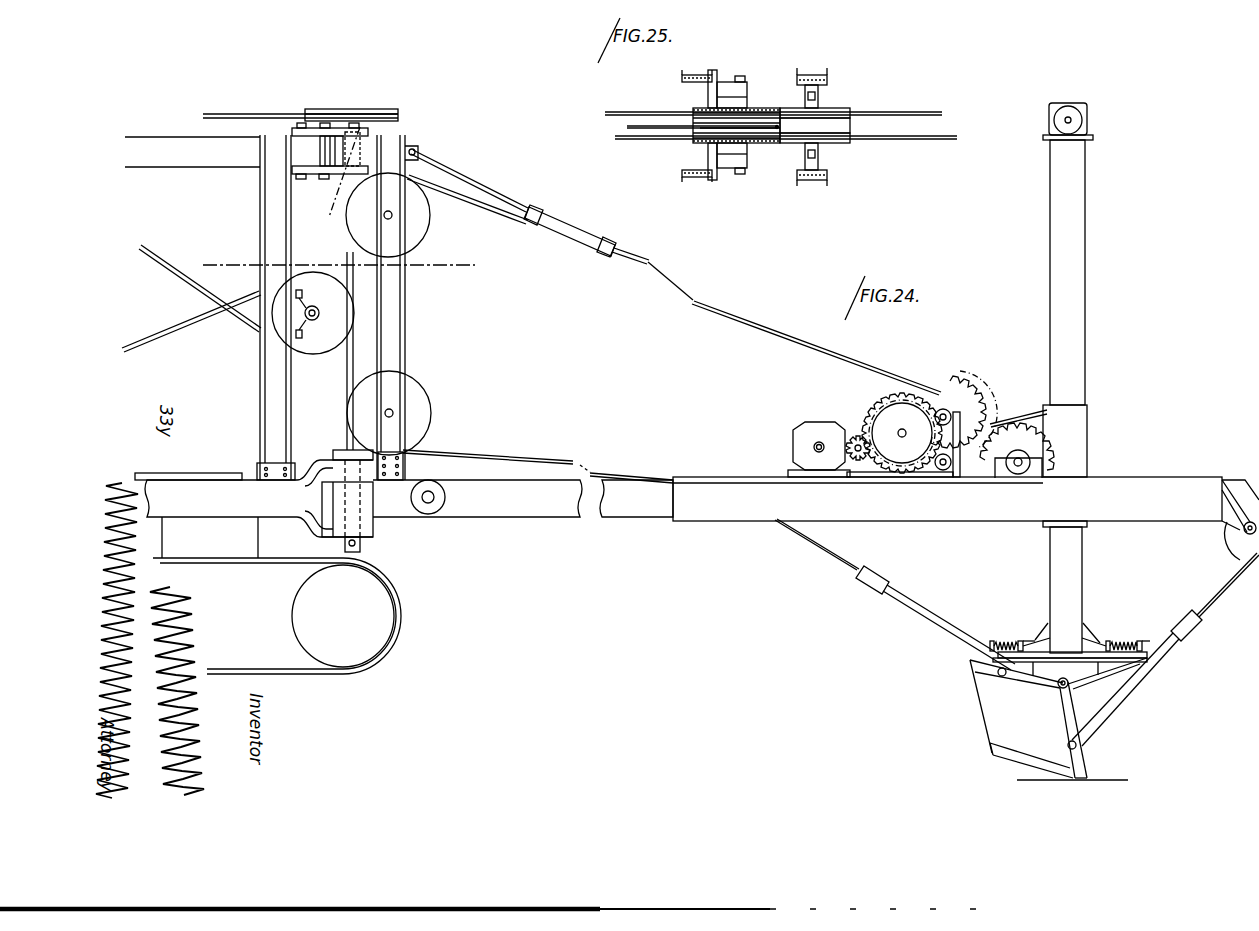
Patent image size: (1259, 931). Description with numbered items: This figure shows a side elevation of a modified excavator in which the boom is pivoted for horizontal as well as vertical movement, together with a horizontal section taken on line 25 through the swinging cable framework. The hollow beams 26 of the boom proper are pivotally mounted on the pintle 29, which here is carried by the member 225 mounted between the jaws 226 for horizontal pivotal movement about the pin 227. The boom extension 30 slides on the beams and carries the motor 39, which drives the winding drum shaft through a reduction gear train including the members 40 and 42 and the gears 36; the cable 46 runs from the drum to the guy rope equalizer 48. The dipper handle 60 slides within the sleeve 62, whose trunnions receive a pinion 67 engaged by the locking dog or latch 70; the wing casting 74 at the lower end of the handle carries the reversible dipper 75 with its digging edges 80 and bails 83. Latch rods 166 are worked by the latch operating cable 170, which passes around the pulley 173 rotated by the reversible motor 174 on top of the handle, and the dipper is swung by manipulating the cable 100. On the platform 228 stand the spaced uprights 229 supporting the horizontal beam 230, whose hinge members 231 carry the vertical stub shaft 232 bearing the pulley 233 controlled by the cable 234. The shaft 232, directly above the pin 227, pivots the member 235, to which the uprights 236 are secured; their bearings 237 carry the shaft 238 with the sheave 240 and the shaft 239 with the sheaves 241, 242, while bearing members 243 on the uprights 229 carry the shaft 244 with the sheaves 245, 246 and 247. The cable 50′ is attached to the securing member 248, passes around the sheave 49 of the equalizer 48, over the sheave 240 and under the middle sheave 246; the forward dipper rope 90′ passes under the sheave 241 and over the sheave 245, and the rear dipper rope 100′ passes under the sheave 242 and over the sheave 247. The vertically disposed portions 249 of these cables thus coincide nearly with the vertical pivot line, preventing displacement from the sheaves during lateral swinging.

In FIG. 24, the section line 25 is at (217, 260).
In FIG. 24, the hollow beams 26 is at (560, 516).
In FIG. 24, the pintle 29 is at (445, 497).
In FIG. 24, the boom extension 30 is at (922, 512).
In FIG. 24, the gears 36 is at (952, 400).
In FIG. 24, the motor 39 is at (813, 425).
In FIG. 24, the reduction gear train member 40 is at (946, 388).
In FIG. 24, the reduction gear train member 42 is at (902, 470).
In FIG. 24, the cable 46 is at (750, 325).
In FIG. 24, the guy rope equalizer 48 is at (565, 240).
In FIG. 24, the sheave 49 is at (528, 210).
In FIG. 24, the cable 50′ is at (182, 270).
In FIG. 25, the cable 50′ is at (622, 127).
In FIG. 24, the dipper handle 60 is at (1075, 333).
In FIG. 24, the sleeve 62 is at (1090, 420).
In FIG. 24, the pinion 67 is at (1032, 445).
In FIG. 24, the locking dog or latch 70 is at (1010, 420).
In FIG. 24, the wing casting 74 is at (1052, 668).
In FIG. 24, the dipper 75 is at (992, 710).
In FIG. 24, the digging edges 80 is at (1090, 778).
In FIG. 24, the bails 83 is at (935, 625).
In FIG. 24, the forward dipper rope 90′ is at (1232, 572).
In FIG. 25, the forward dipper rope 90′ is at (618, 104).
In FIG. 24, the cable 100 is at (182, 320).
In FIG. 24, the rear dipper rope 100′ is at (505, 449).
In FIG. 25, the rear dipper rope 100′ is at (618, 140).
In FIG. 24, the rods 166 is at (1005, 645).
In FIG. 24, the latch operating cable 170 is at (1110, 645).
In FIG. 24, the pulley 173 is at (1062, 112).
In FIG. 24, the reversible motor 174 is at (1085, 118).
In FIG. 24, the member 225 is at (400, 525).
In FIG. 24, the jaws 226 is at (308, 485).
In FIG. 24, the pin 227 is at (362, 548).
In FIG. 24, the platform 228 is at (200, 480).
In FIG. 24, the uprights 229 is at (265, 387).
In FIG. 25, the uprights 229 is at (696, 74).
In FIG. 24, the horizontal beam 230 is at (190, 160).
In FIG. 24, the hinge members 231 is at (310, 135).
In FIG. 24, the vertical stub shaft 232 is at (330, 177).
In FIG. 24, the pulley 233 is at (368, 110).
In FIG. 24, the cable 234 is at (232, 112).
In FIG. 24, the member 235 is at (372, 136).
In FIG. 24, the uprights 236 is at (398, 308).
In FIG. 25, the uprights 236 is at (808, 75).
In FIG. 25, the bearings 237 is at (822, 92).
In FIG. 24, the shaft 238 is at (392, 215).
In FIG. 24, the shaft 239 is at (393, 411).
In FIG. 25, the shaft 239 is at (820, 103).
In FIG. 24, the sheave 240 is at (418, 245).
In FIG. 25, the sheave 241 is at (852, 113).
In FIG. 24, the sheave 242 is at (424, 410).
In FIG. 25, the sheave 242 is at (850, 143).
In FIG. 24, the bearing members 243 is at (312, 322).
In FIG. 25, the bearing members 243 is at (715, 90).
In FIG. 25, the shaft 244 is at (742, 90).
In FIG. 25, the sheave 245 is at (695, 110).
In FIG. 25, the middle sheave 246 is at (765, 130).
In FIG. 24, the sheave 247 is at (314, 308).
In FIG. 25, the sheave 247 is at (695, 142).
In FIG. 24, the securing member 248 is at (416, 150).
In FIG. 24, the vertically disposed portions 249 is at (347, 249).